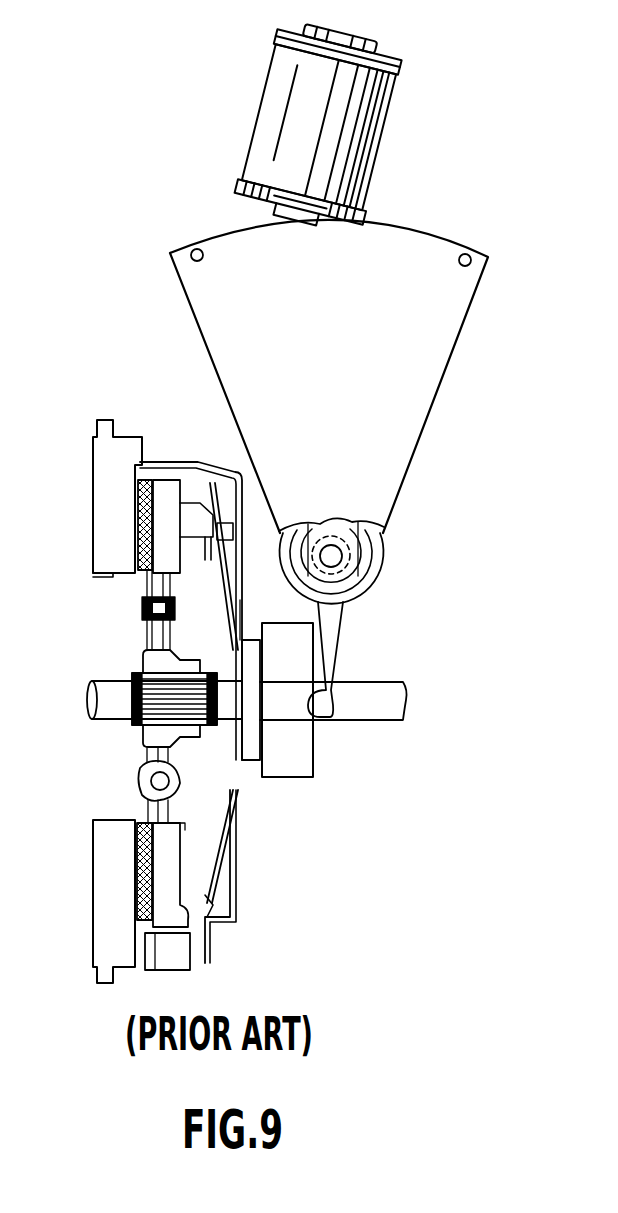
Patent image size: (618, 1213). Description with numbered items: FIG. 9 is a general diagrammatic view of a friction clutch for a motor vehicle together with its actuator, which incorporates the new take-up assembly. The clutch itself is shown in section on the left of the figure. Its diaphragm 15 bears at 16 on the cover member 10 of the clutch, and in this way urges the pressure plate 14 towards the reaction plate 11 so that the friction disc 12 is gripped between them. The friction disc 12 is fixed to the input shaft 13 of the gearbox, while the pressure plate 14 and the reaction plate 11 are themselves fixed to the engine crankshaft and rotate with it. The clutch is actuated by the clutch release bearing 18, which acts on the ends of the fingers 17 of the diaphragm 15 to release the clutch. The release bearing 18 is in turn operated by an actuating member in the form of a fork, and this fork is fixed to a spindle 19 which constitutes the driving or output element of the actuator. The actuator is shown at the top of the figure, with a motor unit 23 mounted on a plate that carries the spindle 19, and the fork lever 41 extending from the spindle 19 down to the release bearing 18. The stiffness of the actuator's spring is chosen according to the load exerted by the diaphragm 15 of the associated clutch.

The cover member 10 is at (158, 450).
The reaction plate 11 is at (100, 462).
The friction disc 12 is at (128, 543).
The input shaft 13 is at (103, 687).
The pressure plate 14 is at (178, 476).
The diaphragm 15 is at (218, 468).
The bearing point of the diaphragm on the cover 16 is at (222, 532).
The fingers 17 is at (237, 610).
The clutch release bearing 18 is at (287, 760).
The spindle 19 is at (343, 556).
The motor 23 is at (381, 137).
The lever 41 is at (342, 657).